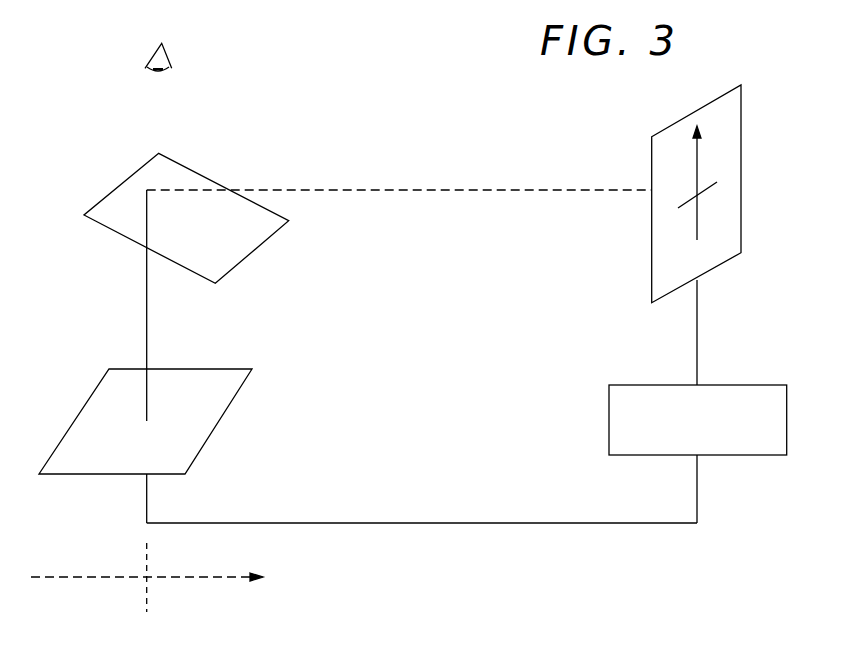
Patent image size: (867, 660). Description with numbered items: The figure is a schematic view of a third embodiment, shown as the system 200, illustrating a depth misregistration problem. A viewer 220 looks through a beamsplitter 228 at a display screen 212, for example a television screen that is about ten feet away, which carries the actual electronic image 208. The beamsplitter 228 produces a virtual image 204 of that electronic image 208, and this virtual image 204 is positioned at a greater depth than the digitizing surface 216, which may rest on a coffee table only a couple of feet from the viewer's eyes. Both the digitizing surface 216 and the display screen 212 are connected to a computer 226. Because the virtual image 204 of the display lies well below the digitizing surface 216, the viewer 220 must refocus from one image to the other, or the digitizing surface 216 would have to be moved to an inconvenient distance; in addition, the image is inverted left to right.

The system 200 is at (400, 125).
The virtual image 204 is at (89, 577).
The actual electronic image 208 is at (693, 227).
The display screen 212 is at (724, 128).
The digitizing surface 216 is at (220, 420).
The viewer 220 is at (167, 57).
The computer 226 is at (740, 456).
The beamsplitter 228 is at (255, 252).